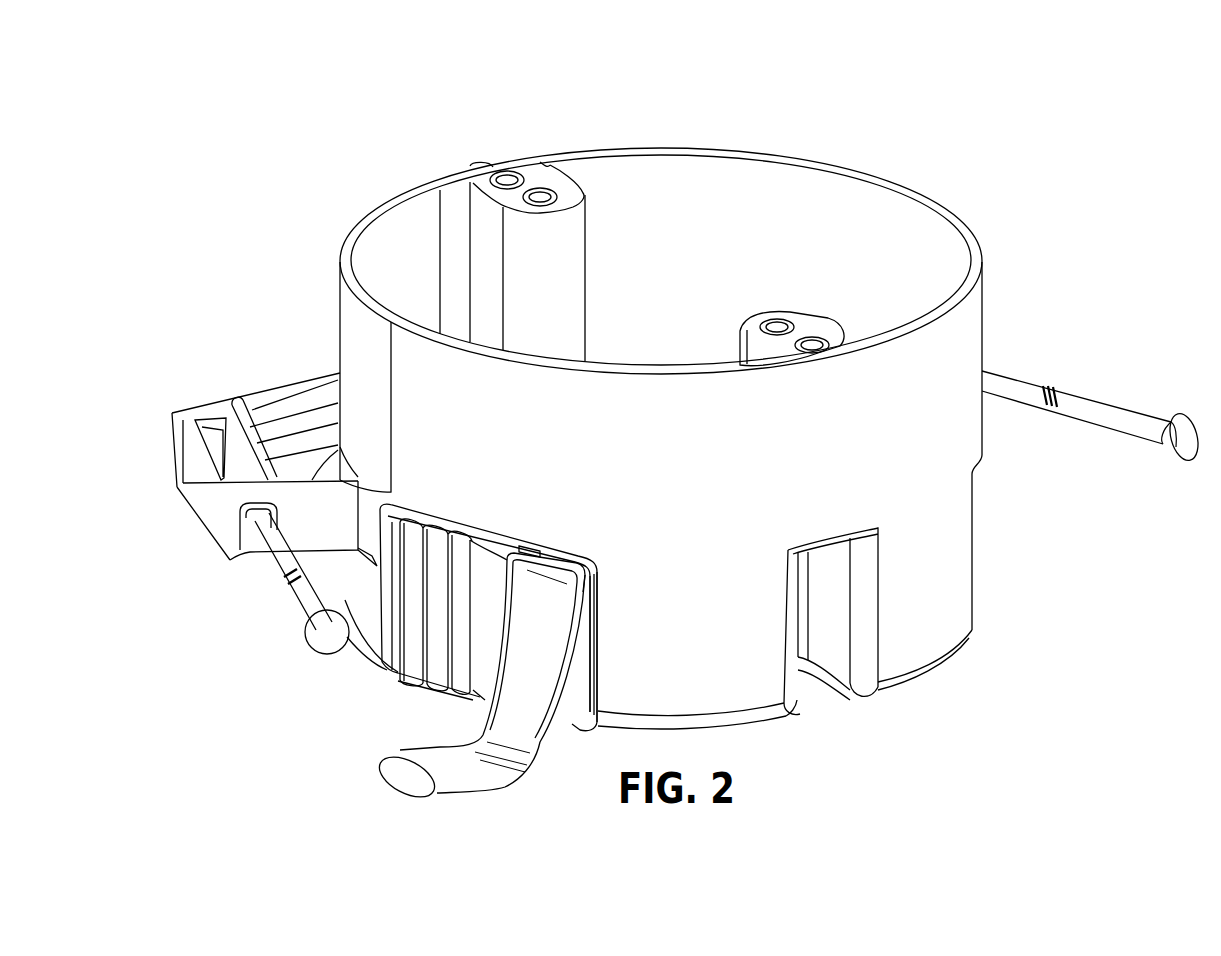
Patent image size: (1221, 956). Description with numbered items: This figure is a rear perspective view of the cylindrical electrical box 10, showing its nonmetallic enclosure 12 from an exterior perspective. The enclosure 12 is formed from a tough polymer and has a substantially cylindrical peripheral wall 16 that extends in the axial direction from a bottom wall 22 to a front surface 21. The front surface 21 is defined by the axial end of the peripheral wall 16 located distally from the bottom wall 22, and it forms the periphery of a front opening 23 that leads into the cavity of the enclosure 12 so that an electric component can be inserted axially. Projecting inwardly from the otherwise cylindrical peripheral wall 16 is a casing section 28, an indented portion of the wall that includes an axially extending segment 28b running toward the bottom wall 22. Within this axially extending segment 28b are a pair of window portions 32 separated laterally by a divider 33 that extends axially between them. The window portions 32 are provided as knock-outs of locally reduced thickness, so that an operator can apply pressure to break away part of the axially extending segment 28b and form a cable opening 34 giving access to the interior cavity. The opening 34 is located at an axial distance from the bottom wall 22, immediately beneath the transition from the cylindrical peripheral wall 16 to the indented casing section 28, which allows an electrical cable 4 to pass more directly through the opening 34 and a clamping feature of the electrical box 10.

The electrical box 10 is at (800, 123).
The enclosure 12 is at (691, 139).
The peripheral wall 16 is at (848, 228).
The front surface 21 is at (651, 151).
The front opening 23 is at (583, 150).
The bottom wall 22 is at (850, 700).
The casing section 28 is at (418, 694).
The axially extending segment 28b is at (589, 641).
The window portions 32 is at (433, 632).
The divider 33 is at (491, 576).
The opening 34 is at (526, 548).
The electrical cable 4 is at (522, 775).